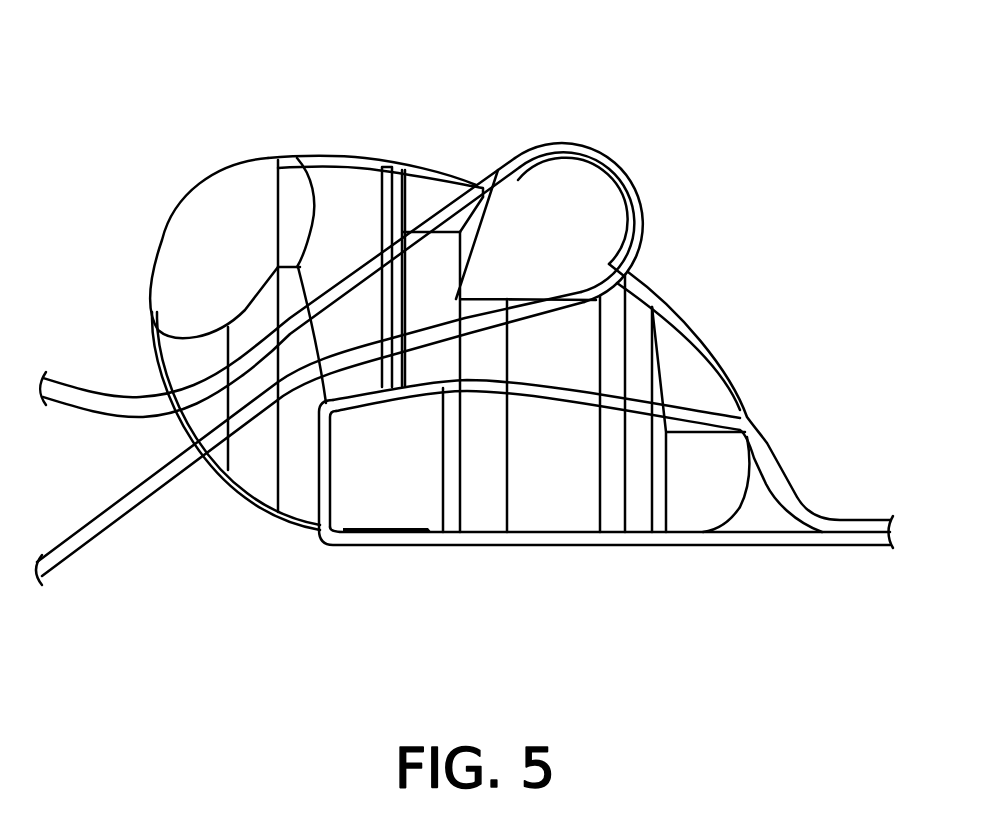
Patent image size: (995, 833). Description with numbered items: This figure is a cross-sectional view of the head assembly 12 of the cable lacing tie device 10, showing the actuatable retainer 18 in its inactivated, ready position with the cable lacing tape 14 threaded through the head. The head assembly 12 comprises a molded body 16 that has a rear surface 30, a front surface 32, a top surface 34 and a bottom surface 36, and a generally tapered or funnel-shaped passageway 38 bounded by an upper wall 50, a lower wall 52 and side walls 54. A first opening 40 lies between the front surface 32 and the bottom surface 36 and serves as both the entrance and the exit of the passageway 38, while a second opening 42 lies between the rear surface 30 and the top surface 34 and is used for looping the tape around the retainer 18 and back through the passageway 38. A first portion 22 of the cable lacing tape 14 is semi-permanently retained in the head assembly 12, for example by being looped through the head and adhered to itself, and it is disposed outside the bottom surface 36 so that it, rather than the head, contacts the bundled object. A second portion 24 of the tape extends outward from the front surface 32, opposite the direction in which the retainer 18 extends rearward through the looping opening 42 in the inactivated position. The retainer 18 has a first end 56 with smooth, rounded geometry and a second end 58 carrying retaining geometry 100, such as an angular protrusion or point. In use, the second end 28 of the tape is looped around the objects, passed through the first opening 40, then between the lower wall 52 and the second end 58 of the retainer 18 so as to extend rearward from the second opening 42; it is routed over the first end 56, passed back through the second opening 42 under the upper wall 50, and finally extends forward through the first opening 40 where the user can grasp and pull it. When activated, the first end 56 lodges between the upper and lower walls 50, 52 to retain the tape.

The cable lacing tie device 10 is at (446, 105).
The head assembly 12 is at (608, 518).
The cable lacing tape 14 is at (122, 514).
The molded body 16 is at (706, 348).
The actuatable retainer 18 is at (567, 218).
The first portion 22 is at (447, 390).
The second portion 24 is at (192, 383).
The second end 28 is at (44, 374).
The rear surface 30 is at (751, 490).
The front surface 32 is at (156, 252).
The top surface 34 is at (219, 170).
The bottom surface 36 is at (380, 528).
The passageway 38 is at (318, 343).
The first opening 40 is at (170, 440).
The second opening 42 is at (647, 293).
The upper wall 50 is at (312, 228).
The lower wall 52 is at (392, 387).
The side walls 54 is at (341, 327).
The first end 56 is at (610, 204).
The second end 58 is at (490, 256).
The retaining geometry 100 is at (498, 168).